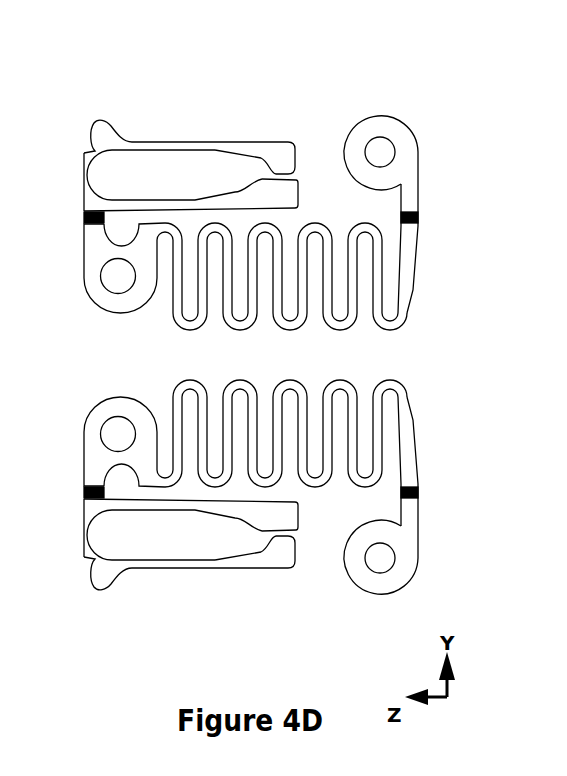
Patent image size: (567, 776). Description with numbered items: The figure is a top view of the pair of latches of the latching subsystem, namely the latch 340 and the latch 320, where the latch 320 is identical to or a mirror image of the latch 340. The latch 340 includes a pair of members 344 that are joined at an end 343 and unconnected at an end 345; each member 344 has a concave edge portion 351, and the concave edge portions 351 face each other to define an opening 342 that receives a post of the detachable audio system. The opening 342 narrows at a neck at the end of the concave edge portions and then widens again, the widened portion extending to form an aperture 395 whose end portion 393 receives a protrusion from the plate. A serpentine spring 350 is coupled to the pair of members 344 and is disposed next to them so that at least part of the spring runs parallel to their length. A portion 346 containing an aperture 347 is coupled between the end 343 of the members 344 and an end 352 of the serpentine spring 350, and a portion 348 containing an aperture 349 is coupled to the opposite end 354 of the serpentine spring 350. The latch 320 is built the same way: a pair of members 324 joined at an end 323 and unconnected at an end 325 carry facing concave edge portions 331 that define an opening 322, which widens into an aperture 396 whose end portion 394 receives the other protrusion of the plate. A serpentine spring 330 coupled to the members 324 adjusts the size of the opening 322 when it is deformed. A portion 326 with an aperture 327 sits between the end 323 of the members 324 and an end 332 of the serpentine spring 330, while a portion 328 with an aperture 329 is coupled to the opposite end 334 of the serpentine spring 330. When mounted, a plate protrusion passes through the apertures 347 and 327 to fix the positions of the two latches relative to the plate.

The latch 340 is at (102, 80).
The end 343 is at (82, 160).
The end portion 393 is at (113, 172).
The aperture 395 is at (187, 180).
The end 345 is at (290, 168).
The pair of members 344 is at (280, 178).
The concave edge portion 351 is at (253, 160).
The opening 342 is at (230, 158).
The end 352 is at (147, 231).
The serpentine spring 350 is at (280, 303).
The end 354 is at (413, 299).
The portion 348 is at (403, 137).
The aperture 349 is at (387, 153).
The portion 346 is at (90, 273).
The aperture 347 is at (120, 287).
The latch 320 is at (123, 648).
The end 323 is at (96, 534).
The end portion 394 is at (117, 533).
The aperture 396 is at (195, 532).
The end 325 is at (283, 538).
The pair of members 324 is at (280, 532).
The concave edge portion 331 is at (253, 550).
The opening 322 is at (248, 548).
The end 332 is at (162, 472).
The serpentine spring 330 is at (308, 487).
The end 334 is at (413, 393).
The portion 328 is at (403, 572).
The aperture 329 is at (387, 555).
The portion 326 is at (103, 415).
The aperture 327 is at (122, 428).